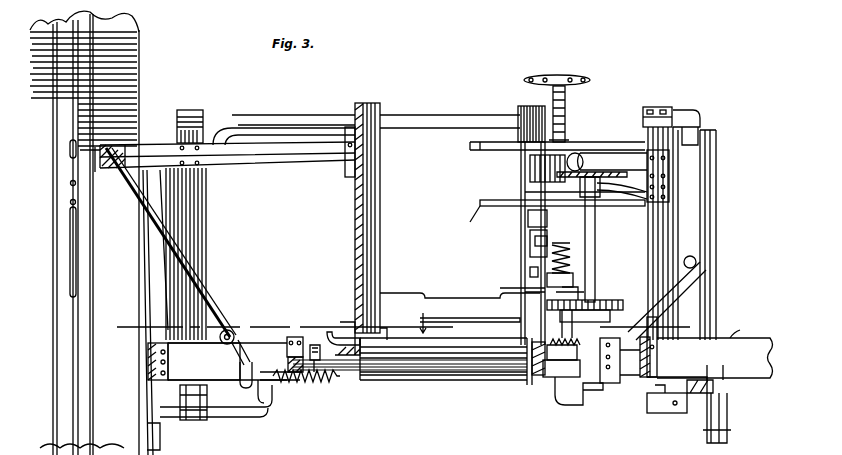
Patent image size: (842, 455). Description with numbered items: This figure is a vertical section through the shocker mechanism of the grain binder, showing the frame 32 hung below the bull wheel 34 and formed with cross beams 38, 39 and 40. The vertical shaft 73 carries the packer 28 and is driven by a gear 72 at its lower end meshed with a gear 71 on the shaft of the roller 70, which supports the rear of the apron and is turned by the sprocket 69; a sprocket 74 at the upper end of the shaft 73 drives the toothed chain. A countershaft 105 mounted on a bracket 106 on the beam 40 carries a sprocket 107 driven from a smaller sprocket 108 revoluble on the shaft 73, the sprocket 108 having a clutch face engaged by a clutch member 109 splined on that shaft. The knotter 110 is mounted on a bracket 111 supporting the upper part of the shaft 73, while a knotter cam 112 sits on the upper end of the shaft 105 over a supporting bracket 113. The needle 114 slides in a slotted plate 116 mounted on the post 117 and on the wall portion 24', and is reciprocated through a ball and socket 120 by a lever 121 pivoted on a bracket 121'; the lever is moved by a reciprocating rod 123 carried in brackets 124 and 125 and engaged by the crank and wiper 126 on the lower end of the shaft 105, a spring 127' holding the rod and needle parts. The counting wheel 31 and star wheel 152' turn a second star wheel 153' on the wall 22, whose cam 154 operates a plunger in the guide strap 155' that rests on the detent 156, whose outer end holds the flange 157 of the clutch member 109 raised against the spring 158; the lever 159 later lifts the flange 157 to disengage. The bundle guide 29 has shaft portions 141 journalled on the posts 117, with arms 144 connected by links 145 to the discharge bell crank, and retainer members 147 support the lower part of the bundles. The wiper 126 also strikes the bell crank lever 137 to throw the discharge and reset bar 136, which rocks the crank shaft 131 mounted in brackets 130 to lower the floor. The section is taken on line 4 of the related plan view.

The bull wheel 34 is at (140, 48).
The post 117 is at (200, 185).
The ball and socket 120 is at (112, 175).
The links 145 is at (190, 220).
The lever 121 is at (176, 242).
The bracket 121' is at (237, 347).
The arms 144 is at (206, 130).
The shaft portions 141 is at (234, 126).
The needle 114 is at (274, 127).
The slotted plate 116 is at (310, 129).
The wall portion 24' is at (363, 214).
The bundle guide 29 is at (430, 115).
The packer 28 is at (468, 148).
The wall 22 is at (528, 110).
The sprocket 74 is at (578, 78).
The vertical shaft 73 is at (566, 105).
The knotter 110 is at (530, 170).
The bracket 111 is at (594, 160).
The knotter cam 112 is at (612, 162).
The supporting bracket 113 is at (668, 198).
The countershaft 105 is at (596, 254).
The plate 154 is at (512, 200).
The counting wheel 31 is at (467, 220).
The star wheel 152' is at (510, 225).
The second star wheel 153' is at (512, 243).
The guide strap 155' is at (511, 272).
The detent 156 is at (525, 290).
The spring 158 is at (570, 251).
The flange 157 is at (574, 278).
The clutch member 109 is at (584, 292).
The sprocket 107 is at (684, 274).
The bracket 106 is at (634, 330).
The lever 159 is at (640, 320).
The section line 4 is at (725, 318).
The frame 32 is at (745, 324).
The cross beam 40 is at (662, 351).
The discharge and reset bar 136 is at (716, 390).
The bell crank lever 137 is at (674, 409).
The crank and wiper 126 is at (610, 395).
The gear 72 is at (560, 386).
The gear 71 is at (538, 380).
The bracket 125 is at (527, 383).
The roller 70 is at (454, 378).
The reciprocating rod 123 is at (406, 374).
The cross beam 38 is at (146, 366).
The bracket 124 is at (268, 330).
The sprocket 69 is at (313, 344).
The cross beam 39 is at (330, 340).
The spring 127' is at (300, 394).
The brackets 130 is at (208, 407).
The crank shaft 131 is at (272, 407).
The retainer members 147 is at (422, 298).
The sprocket 108 is at (519, 318).